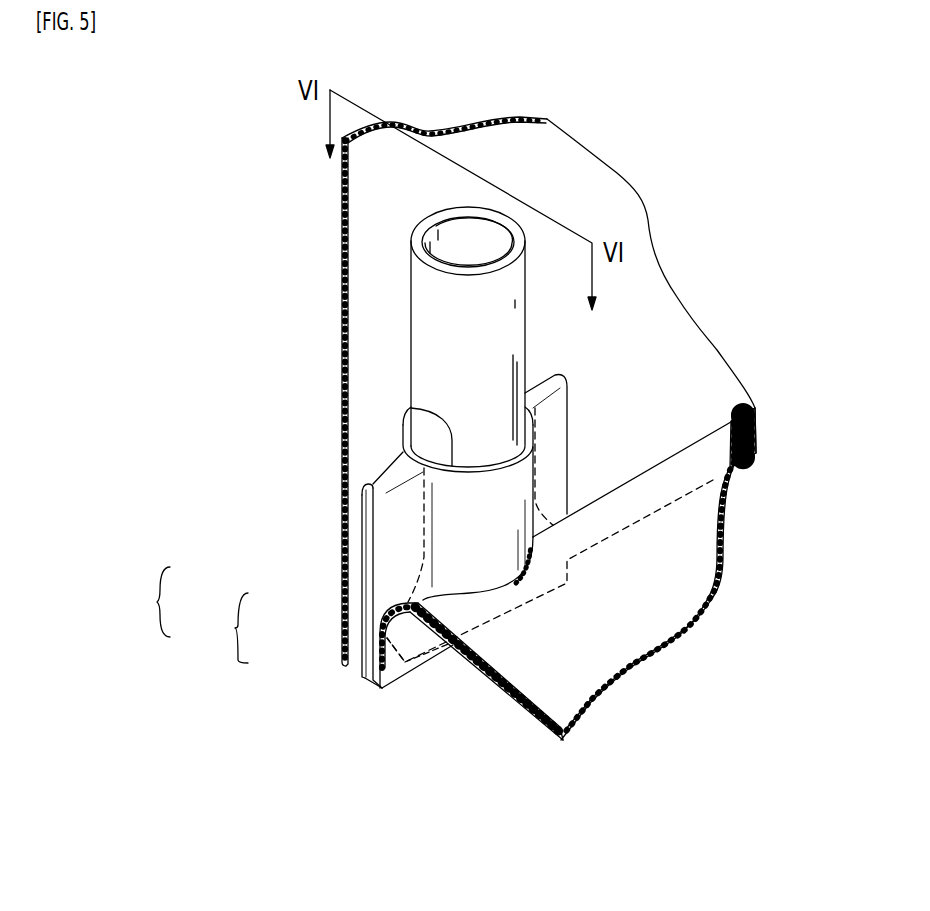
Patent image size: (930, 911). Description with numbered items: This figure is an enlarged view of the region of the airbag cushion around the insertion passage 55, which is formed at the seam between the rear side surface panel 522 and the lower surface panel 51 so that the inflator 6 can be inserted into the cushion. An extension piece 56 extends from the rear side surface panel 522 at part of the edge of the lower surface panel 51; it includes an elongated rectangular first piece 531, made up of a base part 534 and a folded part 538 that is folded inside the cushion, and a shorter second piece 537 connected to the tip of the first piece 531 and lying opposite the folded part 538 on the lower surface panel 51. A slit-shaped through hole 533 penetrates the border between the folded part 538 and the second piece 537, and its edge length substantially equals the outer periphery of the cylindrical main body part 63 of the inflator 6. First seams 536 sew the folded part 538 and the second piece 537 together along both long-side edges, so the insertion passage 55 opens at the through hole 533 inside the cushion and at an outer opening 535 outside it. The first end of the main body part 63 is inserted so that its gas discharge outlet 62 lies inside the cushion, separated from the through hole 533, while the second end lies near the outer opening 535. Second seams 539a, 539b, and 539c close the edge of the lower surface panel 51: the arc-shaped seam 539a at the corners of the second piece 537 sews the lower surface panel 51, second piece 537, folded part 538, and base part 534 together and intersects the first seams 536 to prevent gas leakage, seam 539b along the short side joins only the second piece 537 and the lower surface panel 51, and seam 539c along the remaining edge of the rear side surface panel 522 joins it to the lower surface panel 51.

The inflator 6 is at (400, 314).
The gas discharge outlet 62 is at (452, 220).
The main body part 63 is at (430, 330).
The lower surface panel 51 is at (633, 648).
The rear side surface panel 522 is at (665, 300).
The through hole 533 is at (411, 403).
The base part 534 is at (366, 676).
The outer opening 535 is at (441, 660).
The first seam 536 is at (537, 417).
The second piece 537 is at (373, 573).
The folded part 538 is at (361, 606).
The second seam 539a is at (403, 664).
The second seam 539b is at (428, 648).
The second seam 539c is at (750, 453).
The first piece 531 is at (210, 628).
The insertion passage 55 is at (463, 517).
The extension piece 56 is at (144, 602).